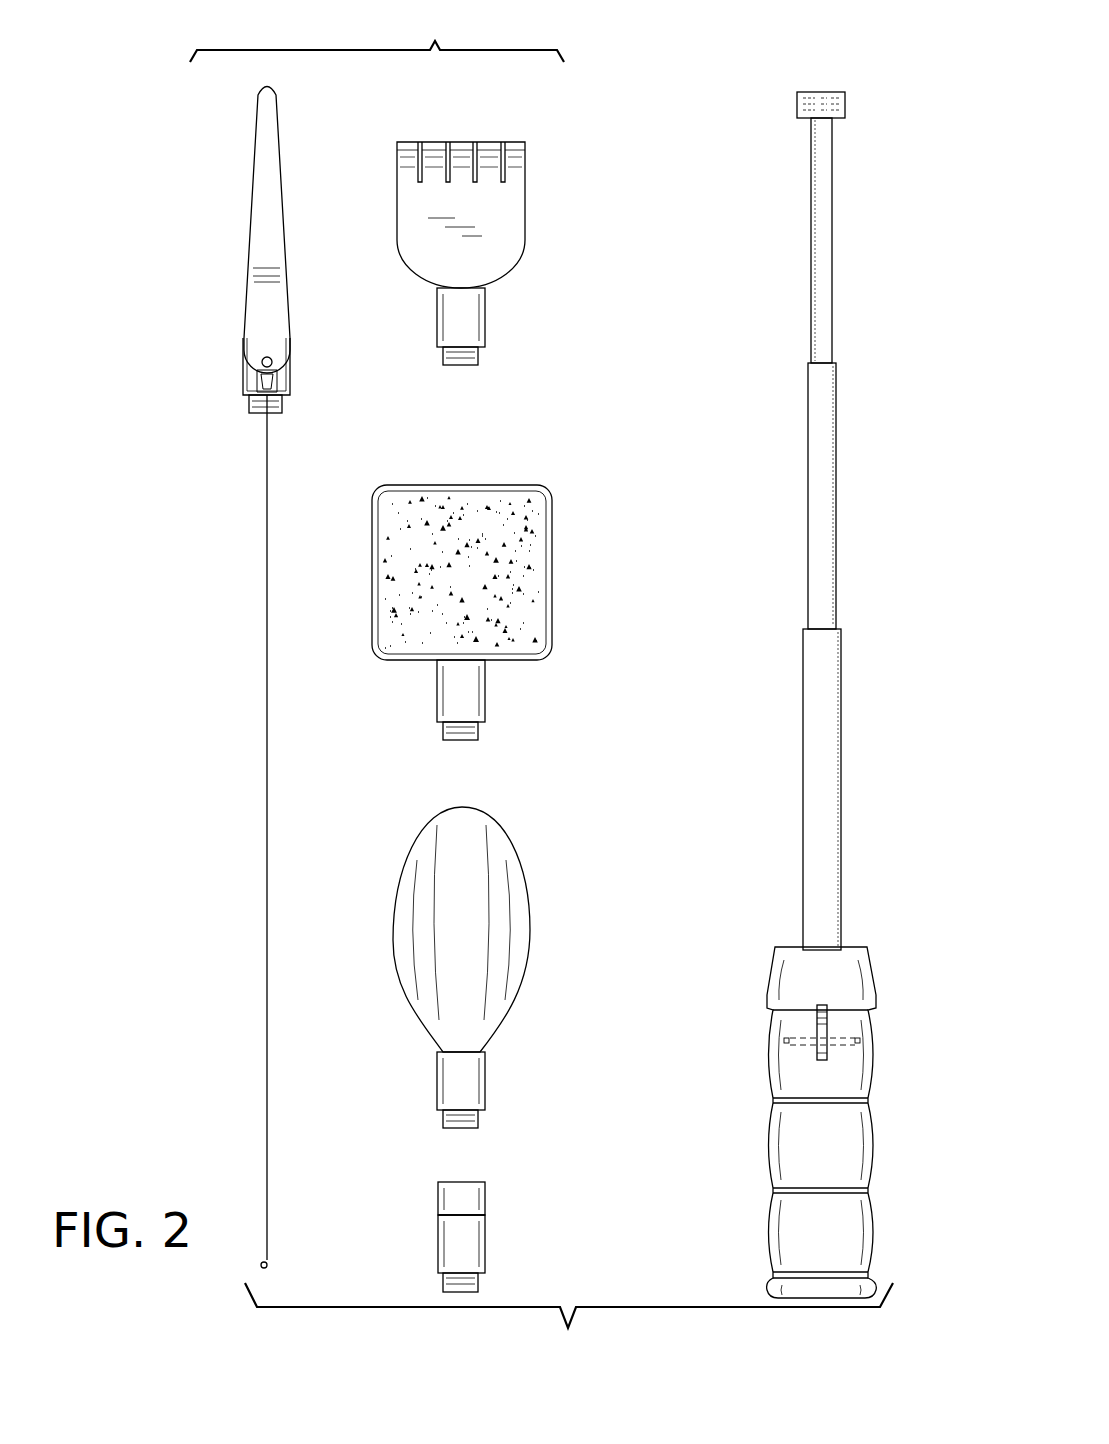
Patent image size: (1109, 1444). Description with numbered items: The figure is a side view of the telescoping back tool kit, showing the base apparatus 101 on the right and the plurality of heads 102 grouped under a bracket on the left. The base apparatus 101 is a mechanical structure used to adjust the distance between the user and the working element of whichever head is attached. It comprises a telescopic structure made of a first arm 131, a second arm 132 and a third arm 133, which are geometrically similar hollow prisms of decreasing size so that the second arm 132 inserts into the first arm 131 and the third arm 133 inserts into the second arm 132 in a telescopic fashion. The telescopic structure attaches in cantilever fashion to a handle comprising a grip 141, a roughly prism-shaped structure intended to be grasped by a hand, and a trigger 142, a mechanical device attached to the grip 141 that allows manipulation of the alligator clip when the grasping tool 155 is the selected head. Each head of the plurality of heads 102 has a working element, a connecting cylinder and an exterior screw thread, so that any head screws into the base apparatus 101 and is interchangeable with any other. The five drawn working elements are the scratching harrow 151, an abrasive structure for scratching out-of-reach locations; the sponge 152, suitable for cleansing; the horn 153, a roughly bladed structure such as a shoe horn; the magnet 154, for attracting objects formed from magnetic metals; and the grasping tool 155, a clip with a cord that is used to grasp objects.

The base apparatus 101 is at (853, 103).
The plurality of heads 102 is at (377, 32).
The first arm 131 is at (817, 758).
The second arm 132 is at (823, 578).
The third arm 133 is at (820, 317).
The grip 141 is at (798, 1133).
The trigger 142 is at (823, 1047).
The scratching harrow 151 is at (527, 205).
The sponge 152 is at (550, 520).
The horn 153 is at (528, 897).
The magnet 154 is at (485, 1202).
The grasping tool 155 is at (248, 265).